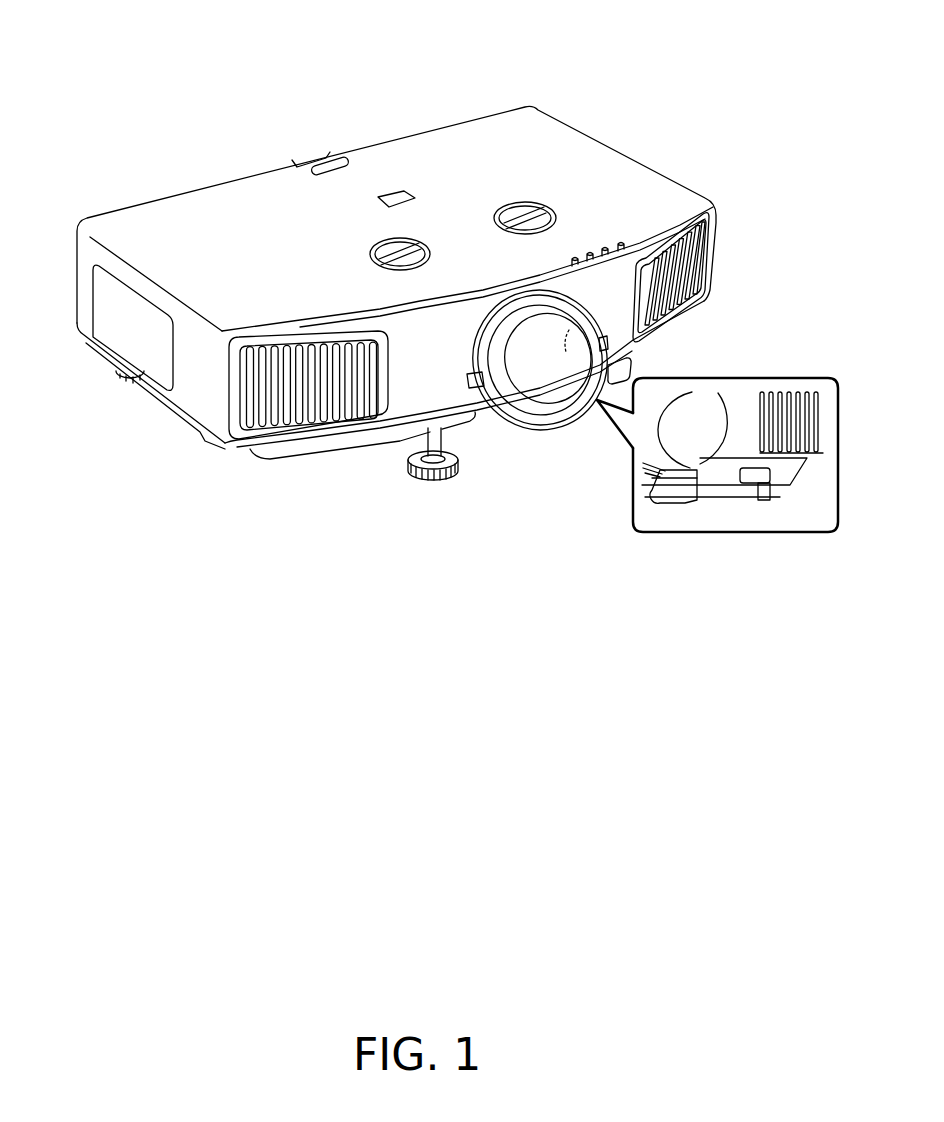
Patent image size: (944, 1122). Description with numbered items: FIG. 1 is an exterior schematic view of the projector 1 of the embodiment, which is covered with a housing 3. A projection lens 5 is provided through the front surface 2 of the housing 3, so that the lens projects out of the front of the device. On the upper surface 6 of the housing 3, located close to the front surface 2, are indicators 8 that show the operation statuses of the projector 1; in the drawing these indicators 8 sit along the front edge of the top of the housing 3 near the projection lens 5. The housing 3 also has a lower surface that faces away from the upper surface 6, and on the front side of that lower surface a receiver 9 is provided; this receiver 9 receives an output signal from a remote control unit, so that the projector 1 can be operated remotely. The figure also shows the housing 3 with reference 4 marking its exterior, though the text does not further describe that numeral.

The projector 1 is at (569, 114).
The front surface 2 is at (393, 410).
The housing 3 is at (641, 177).
The exterior housing 4 is at (440, 120).
The projection lens 5 is at (532, 390).
The upper surface 6 is at (387, 163).
The indicators 8 is at (625, 236).
The receiver 9 is at (757, 477).